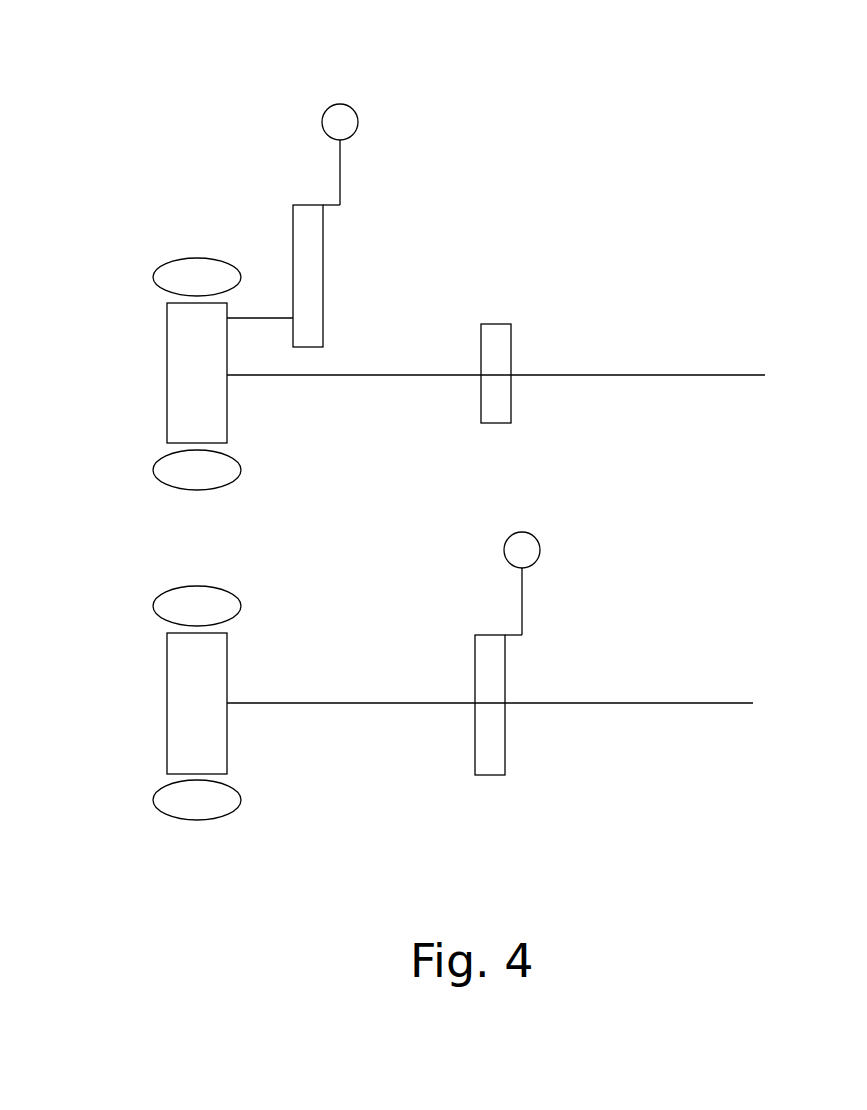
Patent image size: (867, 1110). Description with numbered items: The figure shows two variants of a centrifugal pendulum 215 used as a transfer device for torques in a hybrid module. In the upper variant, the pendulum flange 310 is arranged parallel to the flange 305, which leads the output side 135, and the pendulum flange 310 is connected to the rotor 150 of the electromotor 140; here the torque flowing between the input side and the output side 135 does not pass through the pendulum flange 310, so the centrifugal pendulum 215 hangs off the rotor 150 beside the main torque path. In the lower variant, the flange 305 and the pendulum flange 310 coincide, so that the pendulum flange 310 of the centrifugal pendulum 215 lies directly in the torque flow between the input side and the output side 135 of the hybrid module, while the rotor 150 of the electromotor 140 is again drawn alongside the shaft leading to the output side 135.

The output side 135 is at (733, 367).
The electromotor 140 is at (198, 183).
The rotor 150 is at (167, 364).
The centrifugal pendulum 215 is at (338, 98).
The flange 305 is at (493, 323).
The pendulum flange 310 is at (292, 214).